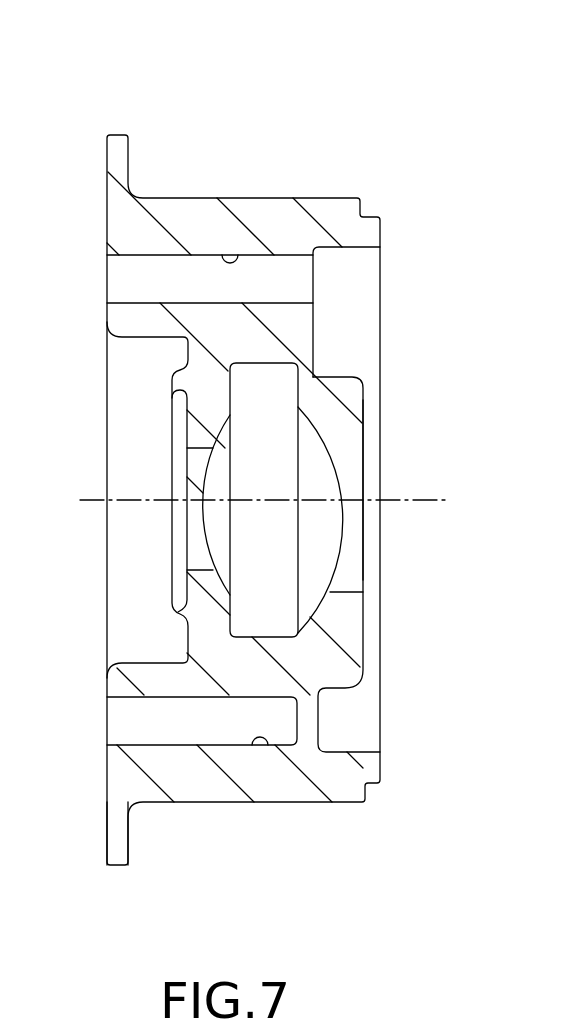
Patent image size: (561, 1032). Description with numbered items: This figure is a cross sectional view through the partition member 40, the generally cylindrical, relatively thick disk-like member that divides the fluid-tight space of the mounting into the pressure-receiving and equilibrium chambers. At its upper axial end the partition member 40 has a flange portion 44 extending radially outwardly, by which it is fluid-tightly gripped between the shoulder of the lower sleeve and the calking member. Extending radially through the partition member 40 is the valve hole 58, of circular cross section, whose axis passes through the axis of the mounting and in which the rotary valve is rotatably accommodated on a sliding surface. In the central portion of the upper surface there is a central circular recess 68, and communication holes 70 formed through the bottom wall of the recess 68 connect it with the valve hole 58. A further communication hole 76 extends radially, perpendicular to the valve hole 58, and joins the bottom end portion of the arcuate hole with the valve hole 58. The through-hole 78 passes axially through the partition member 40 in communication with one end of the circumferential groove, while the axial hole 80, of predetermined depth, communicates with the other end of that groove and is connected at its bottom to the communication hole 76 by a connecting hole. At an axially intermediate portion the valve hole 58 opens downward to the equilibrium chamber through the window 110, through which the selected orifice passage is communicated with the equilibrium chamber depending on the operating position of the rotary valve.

The partition member 40 is at (383, 140).
The flange portion 44 is at (118, 843).
The valve hole 58 is at (340, 537).
The central circular recess 68 is at (138, 340).
The communication holes 70 is at (200, 445).
The communication hole 76 is at (275, 363).
The through-hole 78 is at (241, 256).
The axial hole 80 is at (272, 745).
The window 110 is at (342, 445).